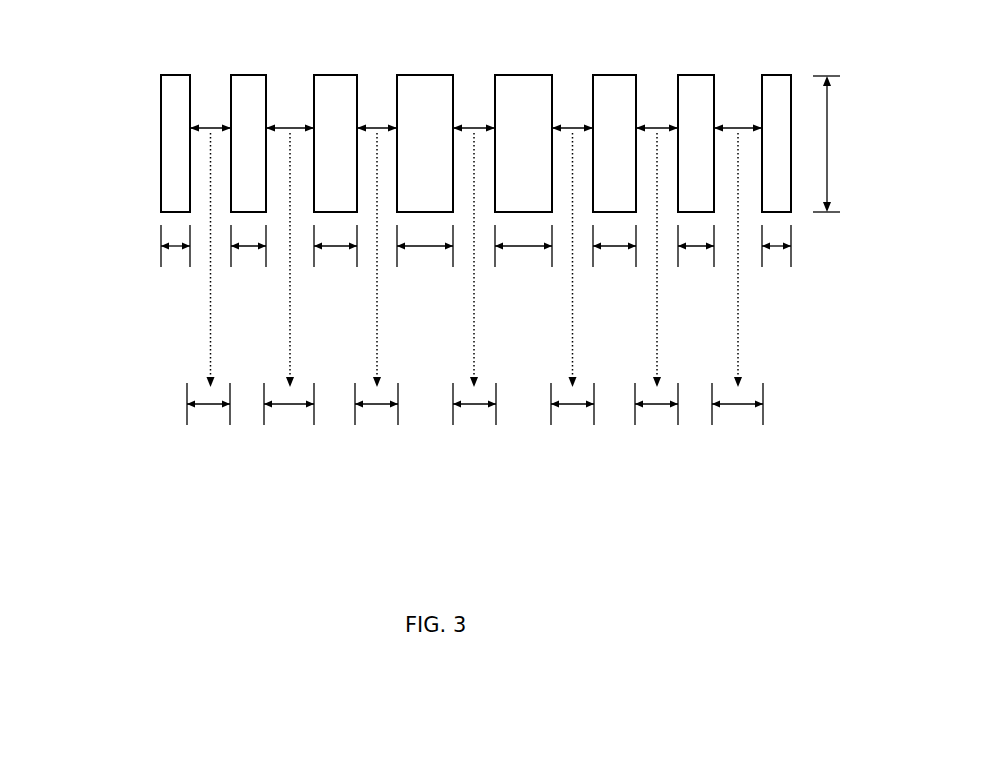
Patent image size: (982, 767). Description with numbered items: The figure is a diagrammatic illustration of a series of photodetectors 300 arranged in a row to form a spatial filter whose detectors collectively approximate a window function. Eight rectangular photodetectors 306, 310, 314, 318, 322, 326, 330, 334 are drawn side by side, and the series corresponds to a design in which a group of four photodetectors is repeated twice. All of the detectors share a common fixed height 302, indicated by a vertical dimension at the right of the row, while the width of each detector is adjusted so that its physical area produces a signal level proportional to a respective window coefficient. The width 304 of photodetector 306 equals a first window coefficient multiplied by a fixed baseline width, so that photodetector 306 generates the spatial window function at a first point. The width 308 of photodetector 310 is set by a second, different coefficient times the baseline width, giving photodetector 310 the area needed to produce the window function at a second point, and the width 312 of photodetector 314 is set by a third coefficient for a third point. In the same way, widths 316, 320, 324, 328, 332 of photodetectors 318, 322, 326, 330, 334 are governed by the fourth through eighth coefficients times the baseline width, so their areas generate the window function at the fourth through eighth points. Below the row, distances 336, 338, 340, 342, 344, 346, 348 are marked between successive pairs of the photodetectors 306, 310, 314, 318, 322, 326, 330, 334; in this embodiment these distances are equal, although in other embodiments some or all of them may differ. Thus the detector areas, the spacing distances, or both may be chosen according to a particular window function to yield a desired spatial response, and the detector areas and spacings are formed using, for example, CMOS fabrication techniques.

The series of photodetectors 300 is at (127, 142).
The height 302 is at (845, 144).
The width 304 is at (174, 284).
The photodetector 306 is at (178, 75).
The width 308 is at (246, 284).
The photodetector 310 is at (248, 75).
The width 312 is at (335, 284).
The photodetector 314 is at (341, 75).
The width 316 is at (425, 284).
The photodetector 318 is at (430, 75).
The width 320 is at (523, 284).
The photodetector 322 is at (527, 75).
The width 324 is at (614, 284).
The photodetector 326 is at (613, 75).
The width 328 is at (699, 284).
The photodetector 330 is at (697, 75).
The width 332 is at (776, 284).
The photodetector 334 is at (780, 75).
The distance 336 is at (203, 438).
The distance 338 is at (287, 438).
The distance 340 is at (372, 438).
The distance 342 is at (468, 438).
The distance 344 is at (566, 438).
The distance 346 is at (651, 438).
The distance 348 is at (736, 438).